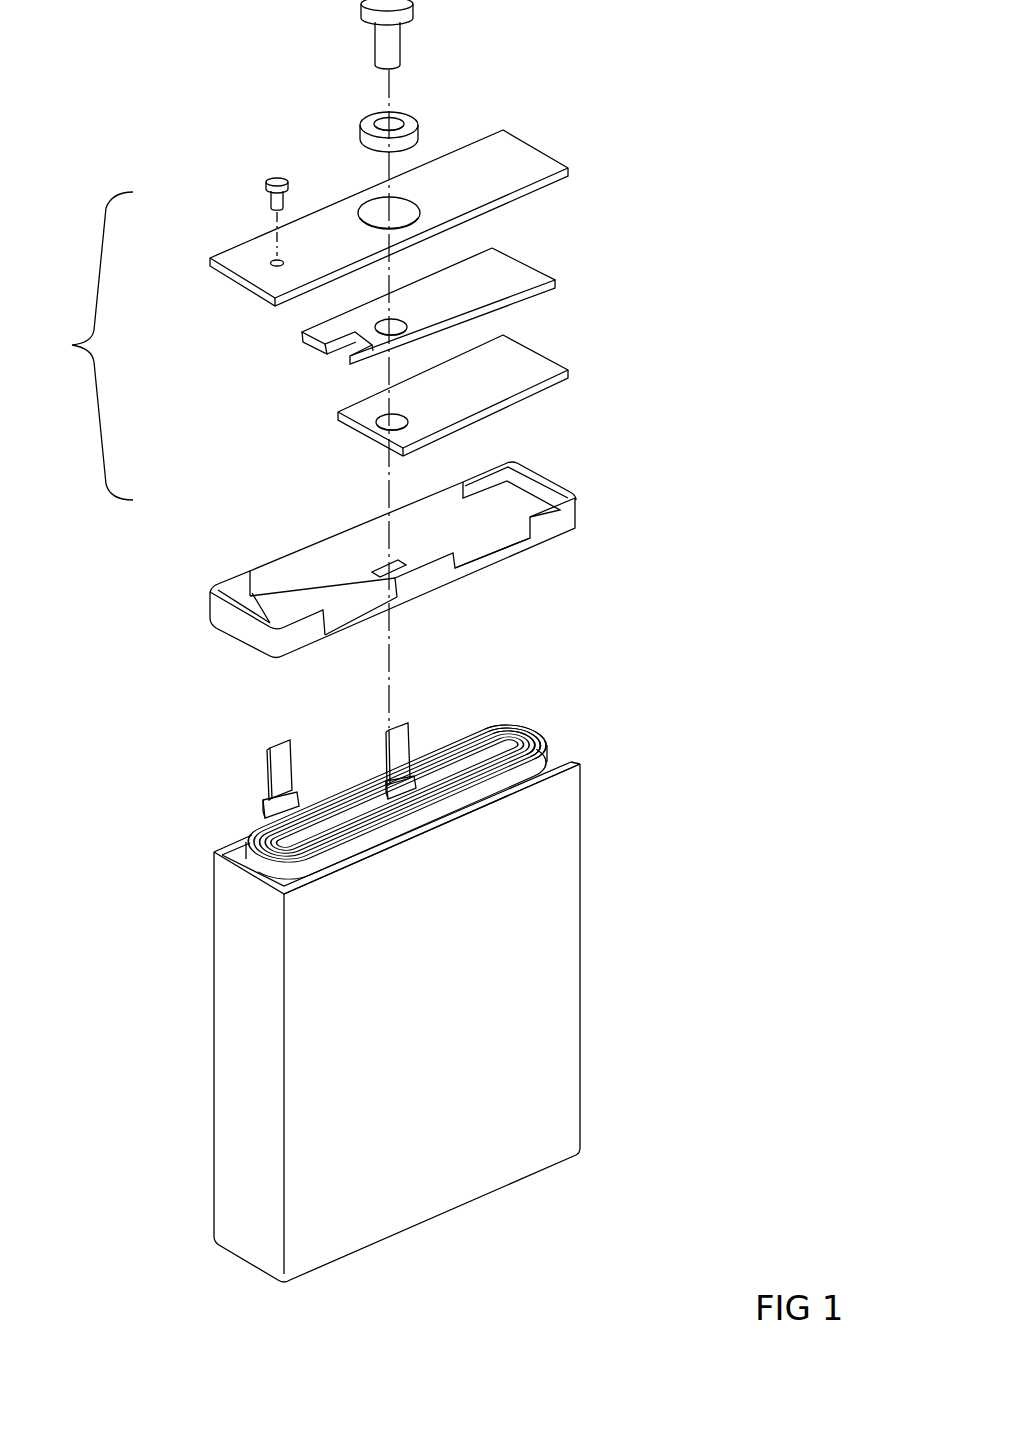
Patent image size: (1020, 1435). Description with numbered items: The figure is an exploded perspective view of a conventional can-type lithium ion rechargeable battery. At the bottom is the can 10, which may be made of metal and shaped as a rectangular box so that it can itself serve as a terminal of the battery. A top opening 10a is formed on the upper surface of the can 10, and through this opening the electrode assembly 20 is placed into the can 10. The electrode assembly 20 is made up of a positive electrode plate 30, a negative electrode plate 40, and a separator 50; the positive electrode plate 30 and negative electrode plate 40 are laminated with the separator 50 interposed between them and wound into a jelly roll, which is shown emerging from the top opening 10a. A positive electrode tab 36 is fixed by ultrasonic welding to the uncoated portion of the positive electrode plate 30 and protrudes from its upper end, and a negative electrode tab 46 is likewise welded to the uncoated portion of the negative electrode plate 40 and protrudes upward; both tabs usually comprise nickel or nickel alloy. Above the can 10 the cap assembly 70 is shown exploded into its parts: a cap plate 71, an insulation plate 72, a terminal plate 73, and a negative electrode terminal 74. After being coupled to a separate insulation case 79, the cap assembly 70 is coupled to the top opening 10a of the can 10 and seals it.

The can 10 is at (557, 860).
The top opening 10a is at (553, 758).
The electrode assembly 20 is at (448, 738).
The positive electrode plate 30 is at (510, 736).
The negative electrode plate 40 is at (540, 740).
The separator 50 is at (528, 730).
The positive electrode tab 36 is at (270, 787).
The negative electrode tab 46 is at (390, 750).
The cap assembly 70 is at (85, 346).
The cap plate 71 is at (252, 277).
The insulation plate 72 is at (327, 327).
The terminal plate 73 is at (345, 417).
The negative electrode terminal 74 is at (353, 8).
The insulation case 79 is at (305, 568).